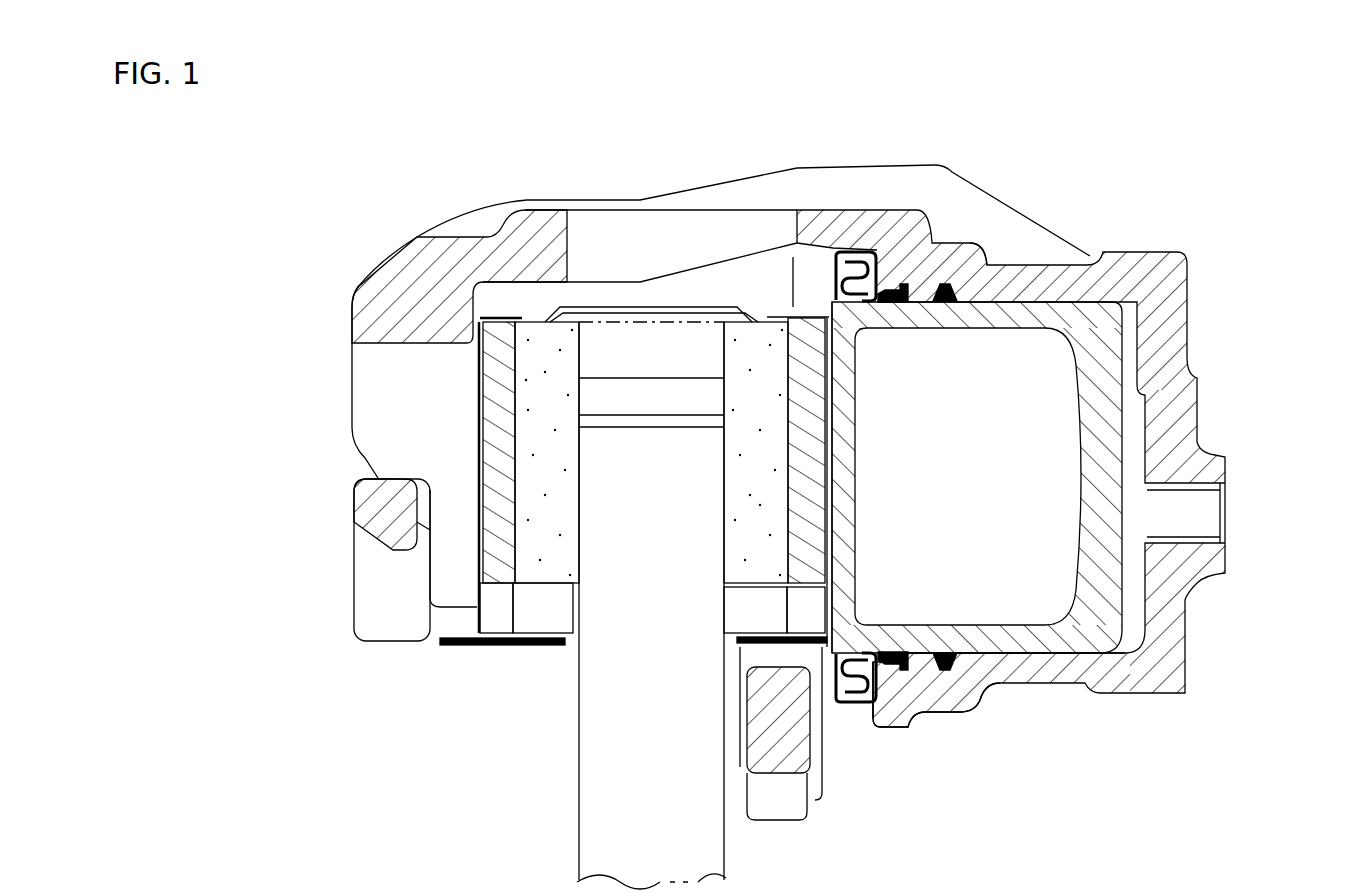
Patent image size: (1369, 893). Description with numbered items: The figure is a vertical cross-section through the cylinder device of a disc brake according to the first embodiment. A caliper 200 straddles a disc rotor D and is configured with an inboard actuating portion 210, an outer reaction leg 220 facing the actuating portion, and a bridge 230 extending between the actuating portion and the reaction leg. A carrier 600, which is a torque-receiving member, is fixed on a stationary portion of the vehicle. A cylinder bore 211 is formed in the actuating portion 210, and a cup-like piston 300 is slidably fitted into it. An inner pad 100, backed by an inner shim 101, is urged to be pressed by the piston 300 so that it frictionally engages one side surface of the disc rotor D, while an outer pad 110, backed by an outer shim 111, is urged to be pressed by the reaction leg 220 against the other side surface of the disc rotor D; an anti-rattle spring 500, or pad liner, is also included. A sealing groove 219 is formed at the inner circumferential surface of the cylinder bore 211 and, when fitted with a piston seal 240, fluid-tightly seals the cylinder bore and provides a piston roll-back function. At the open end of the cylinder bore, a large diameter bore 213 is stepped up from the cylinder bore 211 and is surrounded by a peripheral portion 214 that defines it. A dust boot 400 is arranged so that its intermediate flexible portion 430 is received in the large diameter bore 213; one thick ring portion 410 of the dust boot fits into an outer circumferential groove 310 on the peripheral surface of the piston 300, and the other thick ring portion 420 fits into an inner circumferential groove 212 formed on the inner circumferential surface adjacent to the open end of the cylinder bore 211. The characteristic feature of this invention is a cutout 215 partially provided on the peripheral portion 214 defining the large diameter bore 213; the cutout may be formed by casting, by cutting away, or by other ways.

The inner pad 100 is at (740, 508).
The inner shim 101 is at (835, 450).
The outer pad 110 is at (565, 530).
The outer shim 111 is at (475, 380).
The caliper 200 is at (811, 451).
The actuating portion 210 is at (1134, 728).
The cylinder bore 211 is at (1125, 630).
The inner circumferential groove 212 is at (938, 280).
The large diameter bore 213 is at (850, 262).
The peripheral portion 214 is at (836, 252).
The cutout 215 is at (863, 713).
The sealing groove 219 is at (990, 262).
The reaction leg 220 is at (350, 428).
The bridge 230 is at (598, 200).
The piston seal 240 is at (957, 683).
The piston 300 is at (1137, 316).
The outer circumferential groove 310 is at (851, 320).
The dust boot 400 is at (865, 718).
The thick ring portion 410 is at (863, 645).
The thick ring portion 420 is at (905, 683).
The intermediate flexible portion 430 is at (827, 693).
The anti-rattle spring 500 is at (668, 388).
The carrier 600 is at (383, 641).
The disc rotor D is at (578, 770).